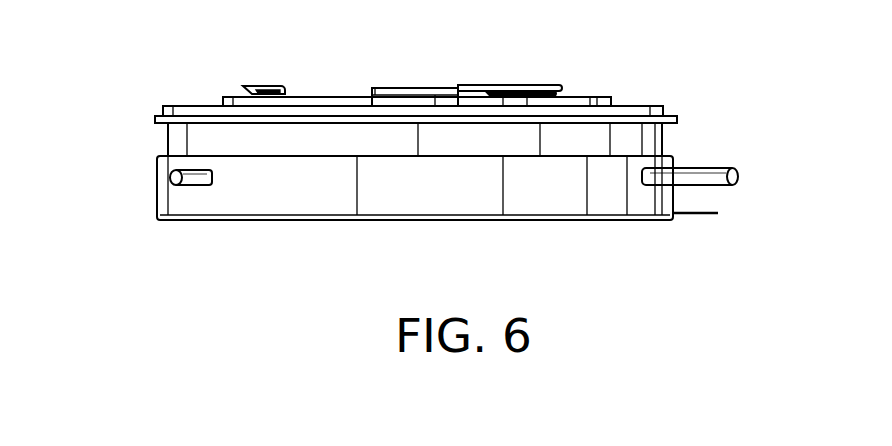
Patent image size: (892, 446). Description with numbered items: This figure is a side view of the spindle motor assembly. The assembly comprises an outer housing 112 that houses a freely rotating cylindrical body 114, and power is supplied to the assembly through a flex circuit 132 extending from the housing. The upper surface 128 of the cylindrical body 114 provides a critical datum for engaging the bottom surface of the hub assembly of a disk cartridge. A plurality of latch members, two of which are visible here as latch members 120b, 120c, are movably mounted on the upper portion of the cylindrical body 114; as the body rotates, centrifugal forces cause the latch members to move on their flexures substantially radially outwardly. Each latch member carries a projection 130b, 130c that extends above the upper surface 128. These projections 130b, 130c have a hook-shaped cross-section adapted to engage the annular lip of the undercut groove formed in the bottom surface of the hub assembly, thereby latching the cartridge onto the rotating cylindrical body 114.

The outer housing 112 is at (168, 140).
The cylindrical body 114 is at (625, 102).
The upper surface 128 is at (323, 96).
The latch member 120b is at (480, 88).
The latch member 120c is at (289, 92).
The projection 130b is at (560, 92).
The projection 130c is at (247, 88).
The flex circuit 132 is at (692, 214).